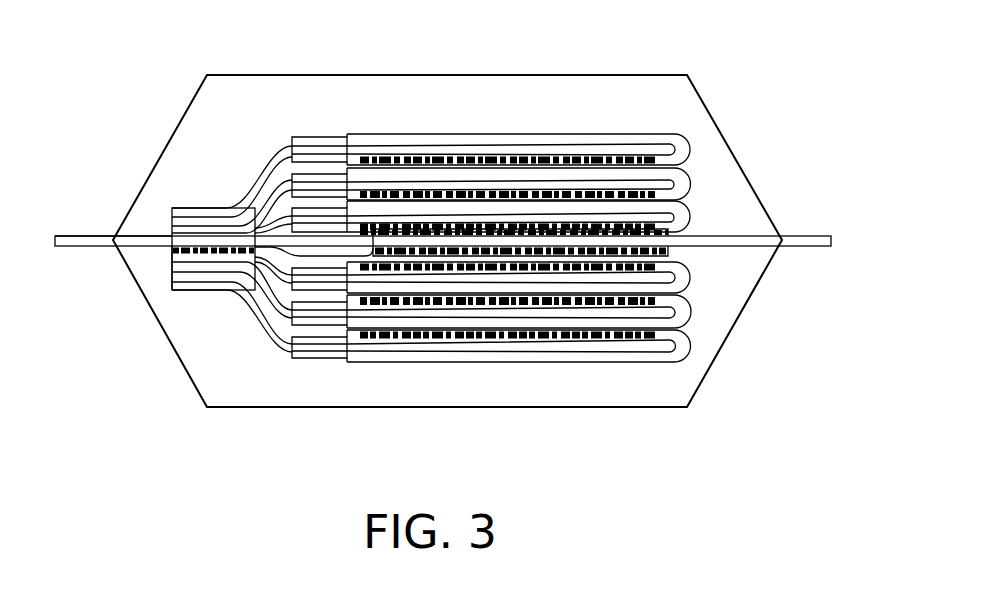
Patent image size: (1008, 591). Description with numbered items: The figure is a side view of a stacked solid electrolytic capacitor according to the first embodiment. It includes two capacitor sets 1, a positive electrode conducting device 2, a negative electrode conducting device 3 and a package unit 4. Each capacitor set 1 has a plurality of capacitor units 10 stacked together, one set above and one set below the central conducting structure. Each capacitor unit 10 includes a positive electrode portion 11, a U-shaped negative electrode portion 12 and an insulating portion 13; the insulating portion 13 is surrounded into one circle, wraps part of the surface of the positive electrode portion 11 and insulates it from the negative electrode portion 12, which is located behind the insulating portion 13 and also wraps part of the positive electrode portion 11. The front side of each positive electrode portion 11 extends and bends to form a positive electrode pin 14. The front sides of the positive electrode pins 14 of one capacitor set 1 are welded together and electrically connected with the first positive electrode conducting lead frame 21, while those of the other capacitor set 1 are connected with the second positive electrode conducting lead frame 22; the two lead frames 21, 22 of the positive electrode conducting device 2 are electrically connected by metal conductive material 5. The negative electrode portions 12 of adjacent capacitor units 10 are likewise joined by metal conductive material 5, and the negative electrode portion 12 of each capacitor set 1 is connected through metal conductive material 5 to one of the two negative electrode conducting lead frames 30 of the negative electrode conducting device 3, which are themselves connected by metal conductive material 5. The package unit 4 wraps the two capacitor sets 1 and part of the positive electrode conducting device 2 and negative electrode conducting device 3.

The capacitor set 1 is at (570, 206).
The positive electrode conducting device 2 is at (142, 254).
The negative electrode conducting device 3 is at (872, 205).
The package unit 4 is at (230, 368).
The metal conductive material 5 is at (257, 195).
The capacitor unit 10 is at (545, 206).
The positive electrode portion 11 is at (252, 185).
The negative electrode portion 12 is at (585, 140).
The insulating portion 13 is at (322, 140).
The positive electrode pin 14 is at (195, 212).
The first positive electrode conducting lead frame 21 is at (83, 243).
The second positive electrode conducting lead frame 22 is at (172, 253).
The negative electrode conducting lead frame 30 is at (795, 240).